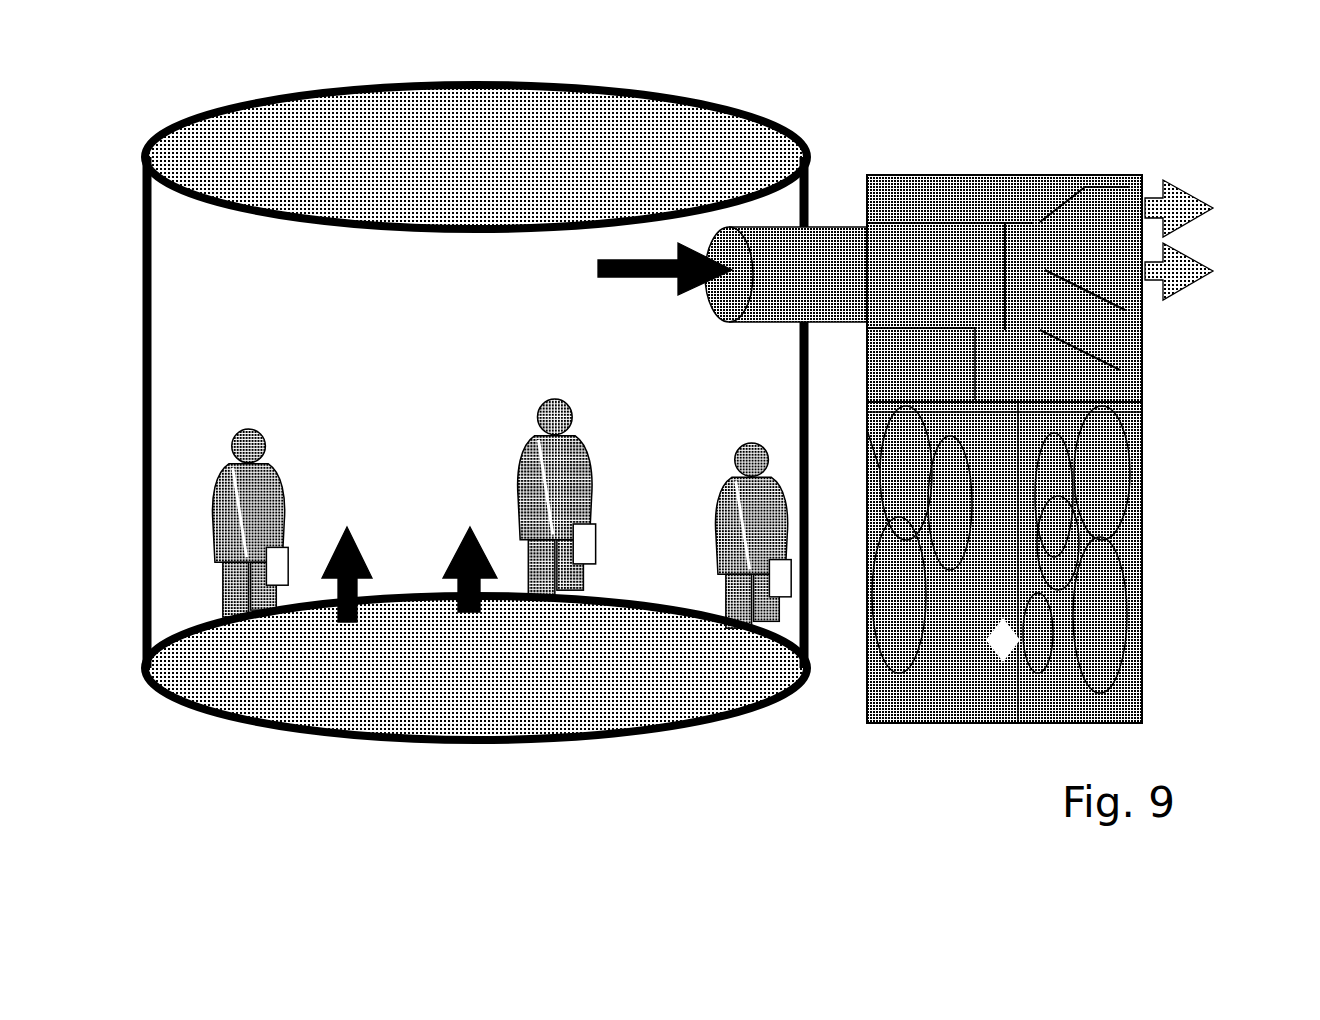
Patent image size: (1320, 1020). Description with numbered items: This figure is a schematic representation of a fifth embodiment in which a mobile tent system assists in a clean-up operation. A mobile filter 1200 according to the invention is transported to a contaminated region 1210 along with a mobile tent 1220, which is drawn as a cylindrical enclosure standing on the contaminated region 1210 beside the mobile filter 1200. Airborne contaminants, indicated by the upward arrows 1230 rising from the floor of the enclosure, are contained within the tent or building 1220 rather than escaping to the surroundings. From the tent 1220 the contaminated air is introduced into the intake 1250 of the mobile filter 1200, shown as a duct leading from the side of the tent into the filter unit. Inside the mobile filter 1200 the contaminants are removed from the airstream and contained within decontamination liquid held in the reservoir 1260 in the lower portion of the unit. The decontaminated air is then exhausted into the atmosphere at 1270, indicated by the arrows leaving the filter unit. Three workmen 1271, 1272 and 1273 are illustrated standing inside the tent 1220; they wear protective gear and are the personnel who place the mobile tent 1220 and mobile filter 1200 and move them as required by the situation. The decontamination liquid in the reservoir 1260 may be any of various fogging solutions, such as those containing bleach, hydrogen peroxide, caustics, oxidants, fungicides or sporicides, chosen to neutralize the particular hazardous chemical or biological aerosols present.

The mobile filter 1200 is at (1057, 404).
The contaminated region 1210 is at (640, 692).
The mobile tent 1220 is at (662, 135).
The airborne contaminants 1230 is at (458, 560).
The intake 1250 is at (812, 252).
The reservoir 1260 is at (1075, 680).
The exhaust 1270 is at (1190, 213).
The workman 1271 is at (278, 470).
The workman 1272 is at (583, 435).
The workman 1273 is at (706, 500).